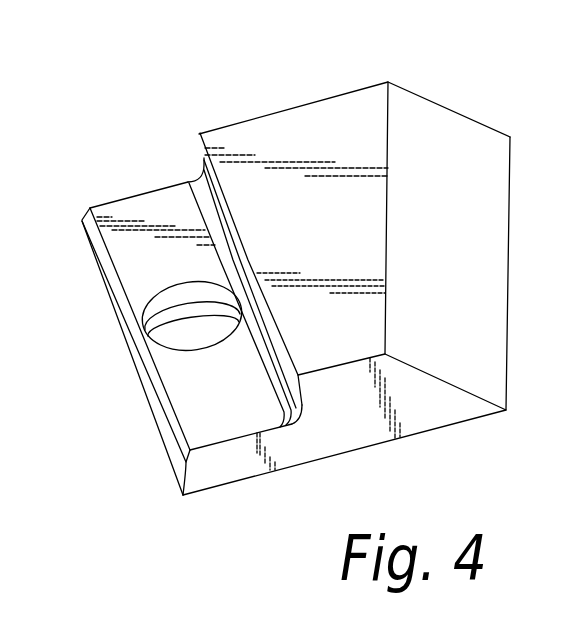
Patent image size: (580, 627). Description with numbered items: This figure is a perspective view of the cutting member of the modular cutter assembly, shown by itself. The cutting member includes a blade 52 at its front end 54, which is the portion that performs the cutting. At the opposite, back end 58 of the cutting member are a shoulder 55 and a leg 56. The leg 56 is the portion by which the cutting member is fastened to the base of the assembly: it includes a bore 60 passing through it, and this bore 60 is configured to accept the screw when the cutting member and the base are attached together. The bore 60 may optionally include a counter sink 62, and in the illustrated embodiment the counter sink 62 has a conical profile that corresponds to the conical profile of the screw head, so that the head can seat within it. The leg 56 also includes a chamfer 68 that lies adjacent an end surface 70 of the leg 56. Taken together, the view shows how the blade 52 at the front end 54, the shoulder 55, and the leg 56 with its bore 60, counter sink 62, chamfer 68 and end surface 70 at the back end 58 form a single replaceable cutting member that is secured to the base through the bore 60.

The blade 52 is at (477, 168).
The front end 54 is at (371, 118).
The shoulder 55 is at (200, 158).
The leg 56 is at (238, 460).
The back end 58 is at (200, 475).
The bore 60 is at (200, 350).
The counter sink 62 is at (160, 303).
The chamfer 68 is at (180, 450).
The end surface 70 is at (160, 397).